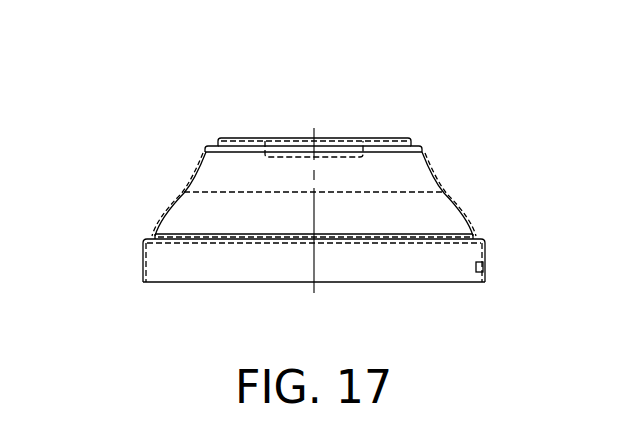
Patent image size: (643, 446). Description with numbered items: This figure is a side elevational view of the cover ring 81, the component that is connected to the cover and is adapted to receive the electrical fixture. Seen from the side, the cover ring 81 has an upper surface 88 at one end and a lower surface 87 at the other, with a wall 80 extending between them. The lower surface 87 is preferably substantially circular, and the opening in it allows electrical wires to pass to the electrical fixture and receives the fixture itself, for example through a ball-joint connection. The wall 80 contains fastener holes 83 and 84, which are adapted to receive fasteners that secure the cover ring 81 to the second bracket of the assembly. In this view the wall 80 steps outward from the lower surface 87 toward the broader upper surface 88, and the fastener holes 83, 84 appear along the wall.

The wall 80 is at (468, 214).
The cover ring 81 is at (446, 174).
The fastener hole 83 is at (486, 265).
The fastener hole 84 is at (143, 258).
The lower surface 87 is at (398, 138).
The upper surface 88 is at (430, 282).